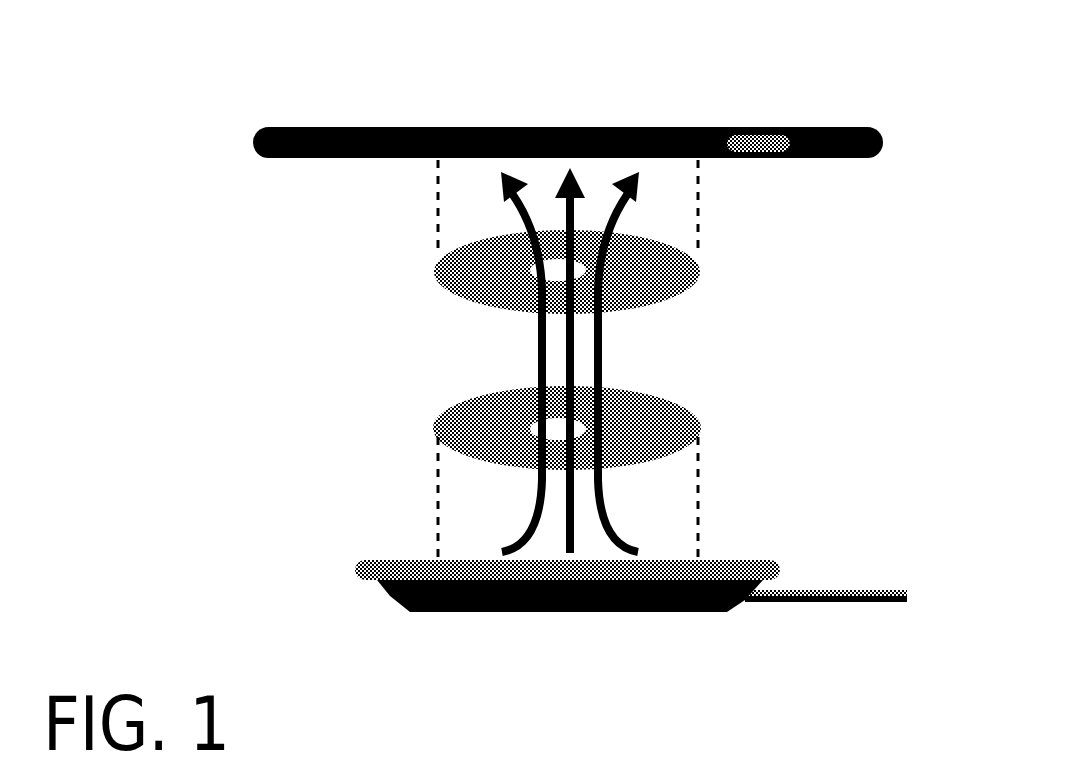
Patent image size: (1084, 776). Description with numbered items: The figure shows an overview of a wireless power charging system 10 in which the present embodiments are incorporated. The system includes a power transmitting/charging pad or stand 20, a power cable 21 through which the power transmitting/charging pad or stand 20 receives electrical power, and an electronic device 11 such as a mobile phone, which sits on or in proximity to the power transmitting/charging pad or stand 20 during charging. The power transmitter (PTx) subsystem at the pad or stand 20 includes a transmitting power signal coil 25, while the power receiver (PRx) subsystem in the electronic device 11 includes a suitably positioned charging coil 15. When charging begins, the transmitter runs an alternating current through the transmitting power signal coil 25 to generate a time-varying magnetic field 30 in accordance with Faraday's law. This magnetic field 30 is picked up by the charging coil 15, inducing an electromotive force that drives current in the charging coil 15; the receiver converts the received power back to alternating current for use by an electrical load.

The wireless power charging system 10 is at (145, 129).
The electronic device 11 is at (807, 127).
The charging coil 15 is at (473, 293).
The power transmitting/charging pad or stand 20 is at (383, 560).
The power cable 21 is at (770, 602).
The transmitting power signal coil 25 is at (675, 407).
The time-varying magnetic field 30 is at (602, 358).